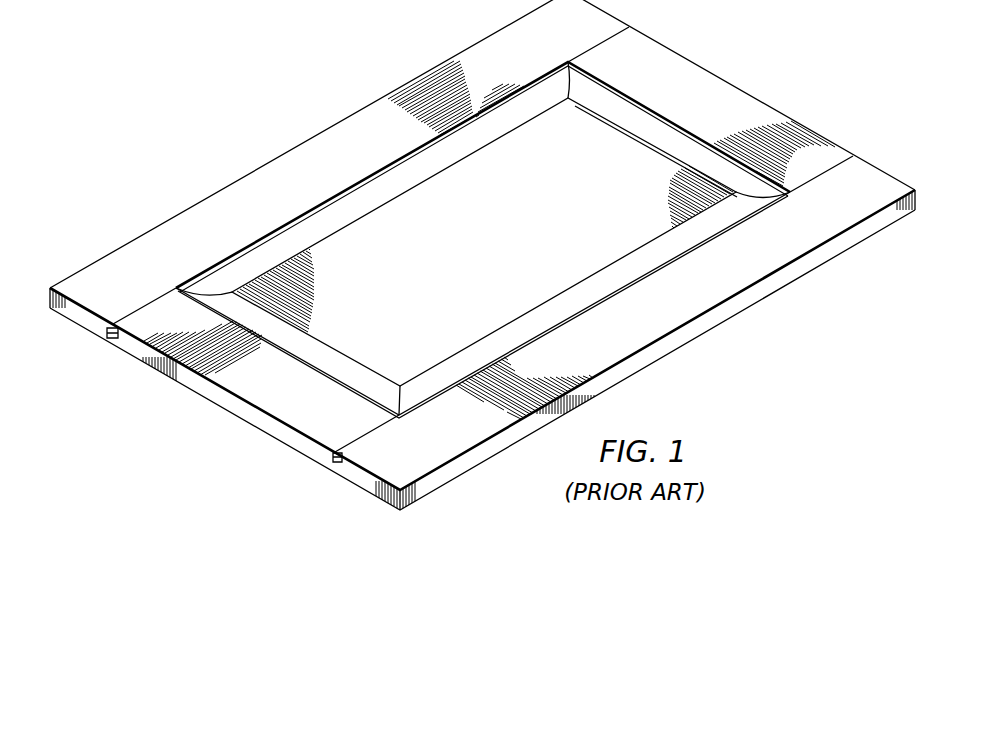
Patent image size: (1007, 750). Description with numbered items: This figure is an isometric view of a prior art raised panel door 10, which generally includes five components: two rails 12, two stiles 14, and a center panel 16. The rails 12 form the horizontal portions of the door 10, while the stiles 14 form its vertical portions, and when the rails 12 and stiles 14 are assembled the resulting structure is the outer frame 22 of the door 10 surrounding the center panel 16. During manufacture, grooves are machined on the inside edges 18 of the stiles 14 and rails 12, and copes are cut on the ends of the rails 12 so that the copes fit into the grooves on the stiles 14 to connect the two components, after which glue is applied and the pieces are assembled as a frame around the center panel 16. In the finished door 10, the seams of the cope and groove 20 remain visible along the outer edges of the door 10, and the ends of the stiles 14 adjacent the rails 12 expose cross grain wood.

The raised panel door 10 is at (348, 60).
The rails 12 is at (659, 55).
The stiles 14 is at (243, 188).
The center panel 16 is at (471, 254).
The inside edges 18 is at (377, 173).
The seams of the cope and groove 20 is at (107, 341).
The outer frame 22 is at (833, 249).